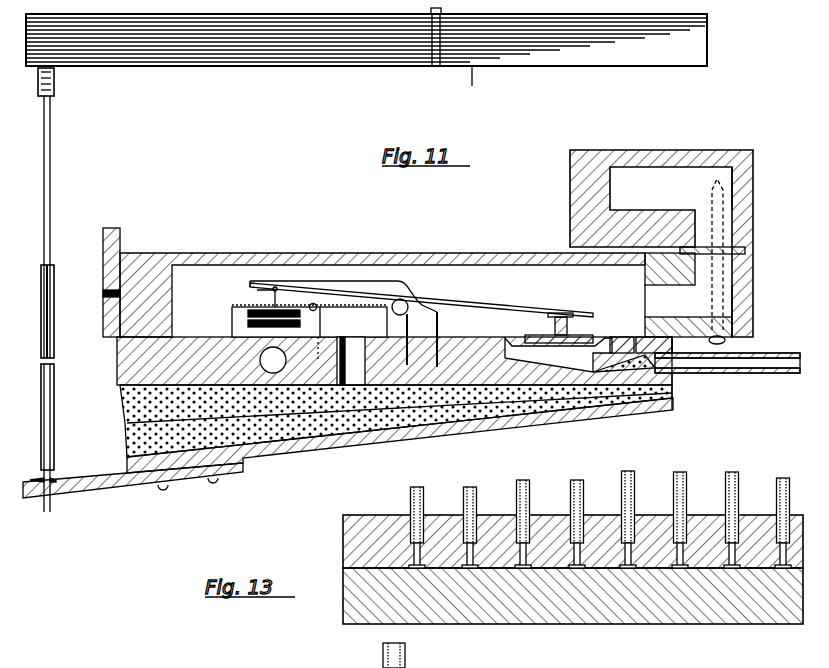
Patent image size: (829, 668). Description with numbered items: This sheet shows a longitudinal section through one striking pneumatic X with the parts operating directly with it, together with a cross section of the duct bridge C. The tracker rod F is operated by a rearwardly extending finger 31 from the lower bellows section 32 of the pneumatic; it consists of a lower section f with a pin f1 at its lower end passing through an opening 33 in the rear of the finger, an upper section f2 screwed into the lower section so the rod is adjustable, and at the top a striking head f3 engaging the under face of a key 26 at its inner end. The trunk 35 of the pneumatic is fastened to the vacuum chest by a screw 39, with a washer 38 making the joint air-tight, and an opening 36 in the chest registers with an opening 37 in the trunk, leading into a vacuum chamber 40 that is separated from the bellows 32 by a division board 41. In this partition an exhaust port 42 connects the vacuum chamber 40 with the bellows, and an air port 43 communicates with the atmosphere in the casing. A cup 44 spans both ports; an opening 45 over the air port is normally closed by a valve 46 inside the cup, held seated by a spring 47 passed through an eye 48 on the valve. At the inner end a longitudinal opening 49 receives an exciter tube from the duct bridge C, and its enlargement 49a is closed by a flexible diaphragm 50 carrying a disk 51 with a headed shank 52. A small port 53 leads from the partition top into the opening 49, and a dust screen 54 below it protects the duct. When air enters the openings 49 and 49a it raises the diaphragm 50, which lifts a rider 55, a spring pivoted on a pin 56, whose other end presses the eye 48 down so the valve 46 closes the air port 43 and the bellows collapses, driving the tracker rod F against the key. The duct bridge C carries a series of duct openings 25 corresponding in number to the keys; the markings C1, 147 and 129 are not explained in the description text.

In FIG. 11, the key 26 is at (306, 67).
In FIG. 11, the striking head f3 is at (56, 88).
In FIG. 11, the upper section f2 is at (34, 180).
In FIG. 11, the tracker rod F is at (73, 175).
In FIG. 11, the lower section f is at (55, 430).
In FIG. 11, the pin f1 is at (48, 515).
In FIG. 11, the opening 33 is at (52, 496).
In FIG. 11, the trunk 35 is at (372, 253).
In FIG. 11, the striking pneumatic x is at (513, 235).
In FIG. 11, the division board 41 is at (197, 334).
In FIG. 11, the opening 45 is at (316, 309).
In FIG. 11, the air port 43 is at (273, 355).
In FIG. 11, the exhaust port 42 is at (351, 361).
In FIG. 11, the valve 46 is at (250, 339).
In FIG. 11, the longitudinal opening 49 is at (558, 355).
In FIG. 11, the enlargement 49a is at (505, 350).
In FIG. 11, the flexible diaphragm 50 is at (616, 337).
In FIG. 11, the small port 53 is at (632, 336).
In FIG. 11, the disk 51 is at (540, 336).
In FIG. 11, the headed shank 52 is at (561, 313).
In FIG. 11, the vacuum chamber 40 is at (520, 322).
In FIG. 11, the pin 56 is at (412, 320).
In FIG. 11, the rider 55 is at (505, 310).
In FIG. 11, the spring 47 is at (400, 292).
In FIG. 11, the cup 44 is at (258, 302).
In FIG. 11, the eye 48 is at (277, 286).
In FIG. 11, the pin plate C1 is at (661, 230).
In FIG. 13, the pin plate C1 is at (573, 584).
In FIG. 11, the washer 38 is at (748, 251).
In FIG. 11, the opening 37 is at (688, 295).
In FIG. 11, the opening 36 is at (706, 218).
In FIG. 11, the screw 39 is at (727, 343).
In FIG. 11, the duct bridge C is at (722, 374).
In FIG. 13, the duct bridge C is at (423, 510).
In FIG. 11, the bellows section 32 is at (412, 430).
In FIG. 11, the screen 54 is at (652, 406).
In FIG. 11, the finger 31 is at (158, 487).
In FIG. 13, the duct openings 25 is at (470, 560).
In FIG. 13, the pin 147 is at (383, 652).
In FIG. 13, the plate 129 is at (455, 667).